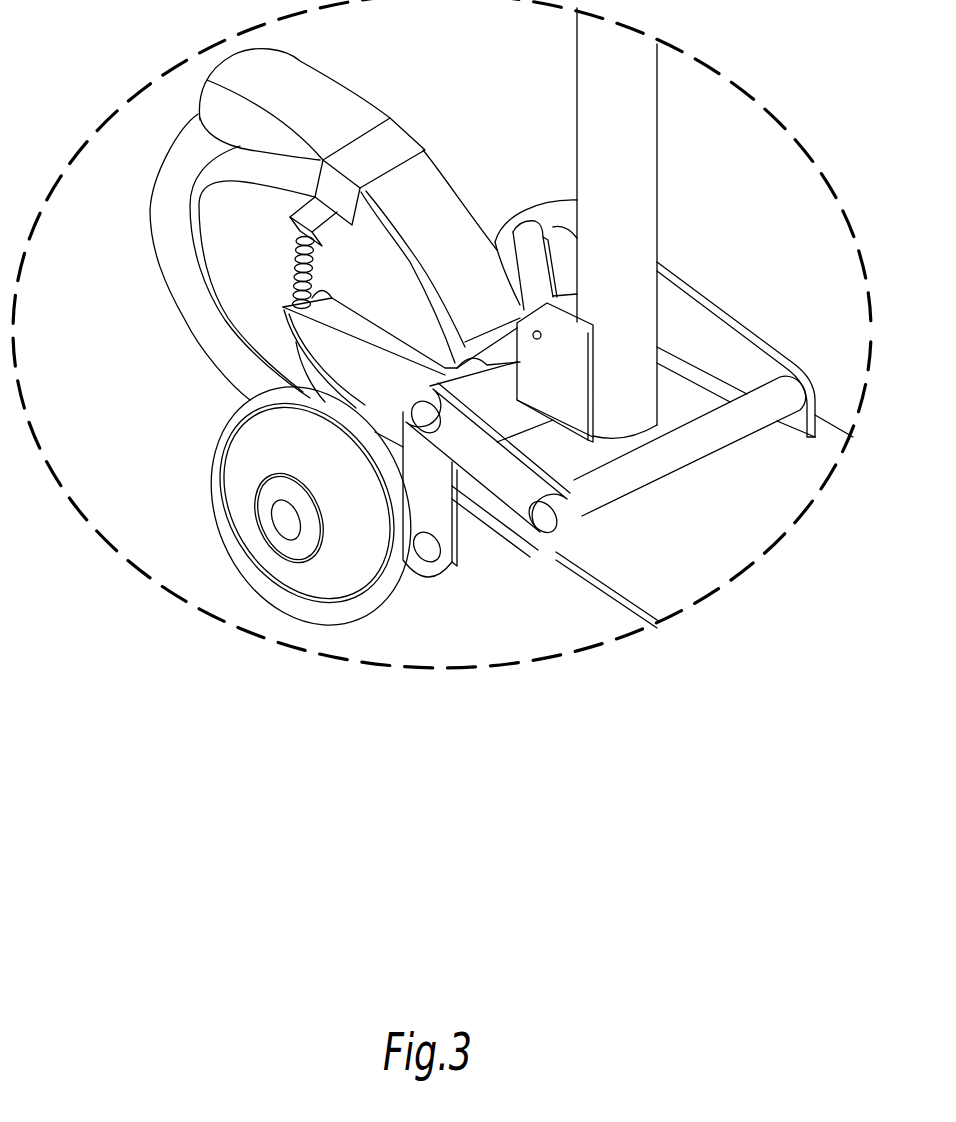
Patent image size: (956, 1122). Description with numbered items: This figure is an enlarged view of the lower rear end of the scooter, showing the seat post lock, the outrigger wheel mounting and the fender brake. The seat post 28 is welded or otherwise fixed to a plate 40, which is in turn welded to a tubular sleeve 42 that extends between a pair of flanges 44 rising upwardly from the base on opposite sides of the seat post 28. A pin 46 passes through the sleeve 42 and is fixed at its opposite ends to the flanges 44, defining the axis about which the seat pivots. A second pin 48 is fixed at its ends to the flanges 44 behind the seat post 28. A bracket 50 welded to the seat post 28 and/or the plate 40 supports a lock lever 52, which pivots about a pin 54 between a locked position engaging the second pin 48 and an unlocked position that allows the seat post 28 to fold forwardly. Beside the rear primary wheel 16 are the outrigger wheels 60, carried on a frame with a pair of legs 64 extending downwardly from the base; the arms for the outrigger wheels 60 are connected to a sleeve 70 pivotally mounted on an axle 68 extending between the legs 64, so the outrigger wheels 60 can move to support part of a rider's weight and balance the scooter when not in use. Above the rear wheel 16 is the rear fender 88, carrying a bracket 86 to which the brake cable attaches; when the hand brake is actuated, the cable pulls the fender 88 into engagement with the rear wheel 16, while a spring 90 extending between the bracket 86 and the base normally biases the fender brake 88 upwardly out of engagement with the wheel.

The rear primary wheel 16 is at (160, 212).
The seat post 28 is at (648, 138).
The plate 40 is at (687, 394).
The tubular sleeve 42 is at (727, 437).
The flanges 44 is at (707, 318).
The pin 46 is at (543, 520).
The second pin 48 is at (443, 432).
The bracket 50 is at (552, 363).
The lock lever 52 is at (521, 266).
The pin 54 is at (532, 334).
The outrigger wheels 60 is at (218, 443).
The legs 64 is at (432, 500).
The axle 68 is at (423, 550).
The sleeve 70 is at (473, 534).
The bracket 86 is at (405, 136).
The rear fender 88 is at (292, 58).
The spring 90 is at (298, 255).